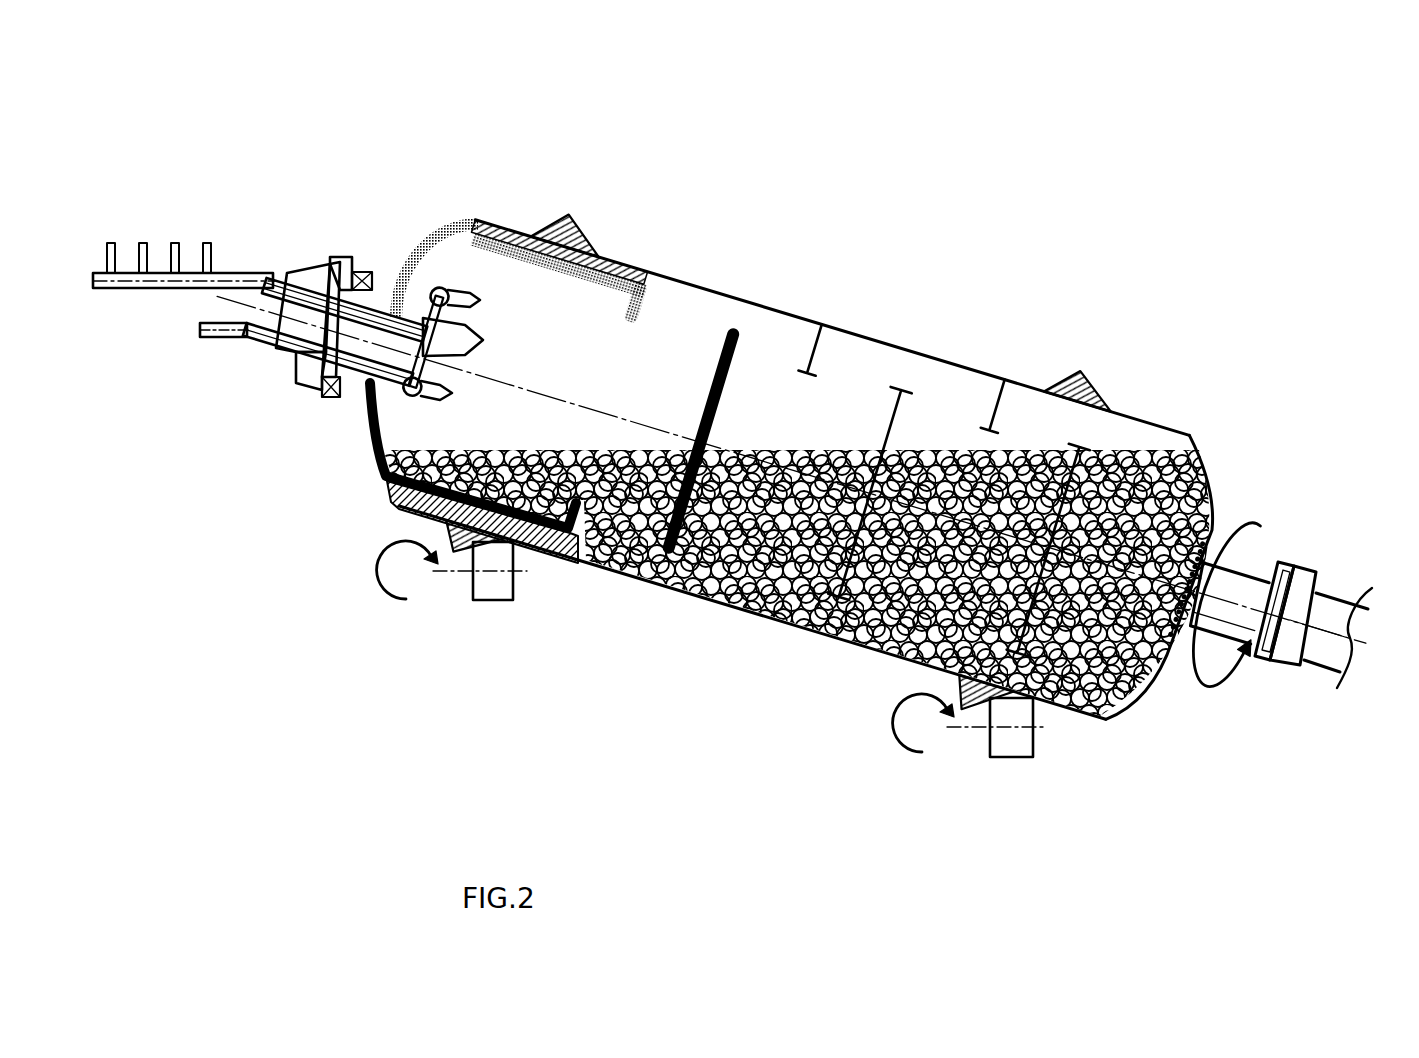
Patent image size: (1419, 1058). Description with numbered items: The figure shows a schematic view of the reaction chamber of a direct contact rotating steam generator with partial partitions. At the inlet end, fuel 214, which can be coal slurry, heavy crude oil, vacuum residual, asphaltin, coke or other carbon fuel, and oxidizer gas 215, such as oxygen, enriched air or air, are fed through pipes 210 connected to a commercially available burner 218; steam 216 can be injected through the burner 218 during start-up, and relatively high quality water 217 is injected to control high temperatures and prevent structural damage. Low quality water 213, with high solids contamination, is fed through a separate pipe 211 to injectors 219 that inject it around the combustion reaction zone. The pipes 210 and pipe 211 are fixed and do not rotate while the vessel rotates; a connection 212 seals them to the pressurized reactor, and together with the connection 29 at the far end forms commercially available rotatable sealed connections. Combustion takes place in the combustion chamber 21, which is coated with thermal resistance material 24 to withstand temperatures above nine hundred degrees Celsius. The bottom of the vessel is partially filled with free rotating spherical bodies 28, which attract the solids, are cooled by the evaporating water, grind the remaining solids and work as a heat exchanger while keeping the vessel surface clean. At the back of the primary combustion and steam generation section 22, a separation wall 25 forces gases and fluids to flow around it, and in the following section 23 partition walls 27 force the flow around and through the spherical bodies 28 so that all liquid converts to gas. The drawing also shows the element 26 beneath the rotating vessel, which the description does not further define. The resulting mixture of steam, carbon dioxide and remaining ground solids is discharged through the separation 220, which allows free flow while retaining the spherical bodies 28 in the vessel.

The combustion chamber 21 is at (459, 262).
The primary combustion and steam generation section 22 is at (709, 305).
The section of the vessel 23 is at (945, 390).
The thermal resistance material 24 is at (716, 378).
The separation wall 25 is at (667, 583).
The support rollers 26 is at (507, 583).
The partition walls 27 is at (893, 387).
The spherical bodies 28 is at (803, 613).
The rotatable sealed connection 29 is at (1324, 607).
The pipes 210 is at (273, 277).
The pipe 211 is at (261, 340).
The connection 212 is at (310, 378).
The low quality water 213 is at (160, 328).
The fuel 214 is at (111, 200).
The oxidizer gas 215 is at (143, 200).
The steam 216 is at (175, 200).
The water 217 is at (207, 200).
The burner 218 is at (422, 298).
The injectors 219 is at (435, 325).
The separation 220 is at (1215, 520).